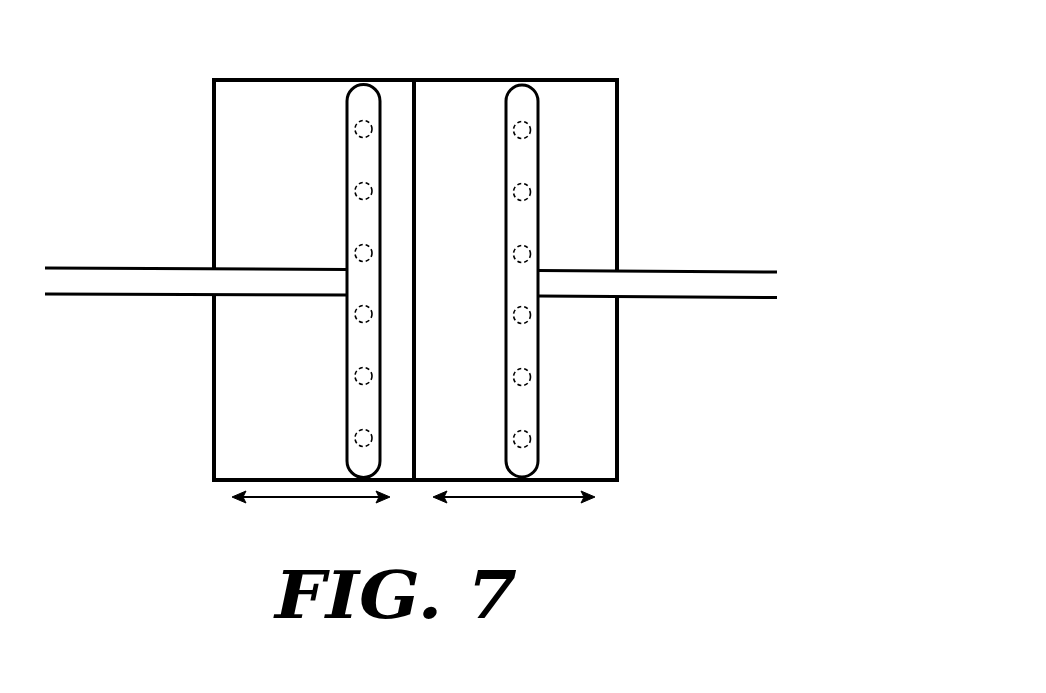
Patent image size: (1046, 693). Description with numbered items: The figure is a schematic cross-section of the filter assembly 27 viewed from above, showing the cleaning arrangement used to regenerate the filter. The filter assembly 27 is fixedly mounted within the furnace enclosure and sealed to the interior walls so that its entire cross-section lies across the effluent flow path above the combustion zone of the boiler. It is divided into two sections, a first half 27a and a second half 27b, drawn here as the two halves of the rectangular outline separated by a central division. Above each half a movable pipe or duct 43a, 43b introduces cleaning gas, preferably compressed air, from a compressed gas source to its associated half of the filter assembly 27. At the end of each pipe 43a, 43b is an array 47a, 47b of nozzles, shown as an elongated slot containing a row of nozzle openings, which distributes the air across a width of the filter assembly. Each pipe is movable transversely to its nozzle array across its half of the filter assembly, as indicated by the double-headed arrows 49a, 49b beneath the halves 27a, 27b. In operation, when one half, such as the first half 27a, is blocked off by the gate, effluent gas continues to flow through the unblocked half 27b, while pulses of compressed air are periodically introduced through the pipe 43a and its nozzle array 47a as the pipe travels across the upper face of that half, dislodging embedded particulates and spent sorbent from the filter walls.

The filter assembly 27 is at (401, 256).
The first half of the filter assembly 27a is at (242, 365).
The second half of the filter assembly 27b is at (587, 388).
The movable pipe 43a is at (128, 268).
The movable pipe 43b is at (654, 272).
The array of nozzles 47a is at (347, 140).
The array of nozzles 47b is at (538, 152).
The arrow 49a is at (297, 498).
The arrow 49b is at (510, 498).